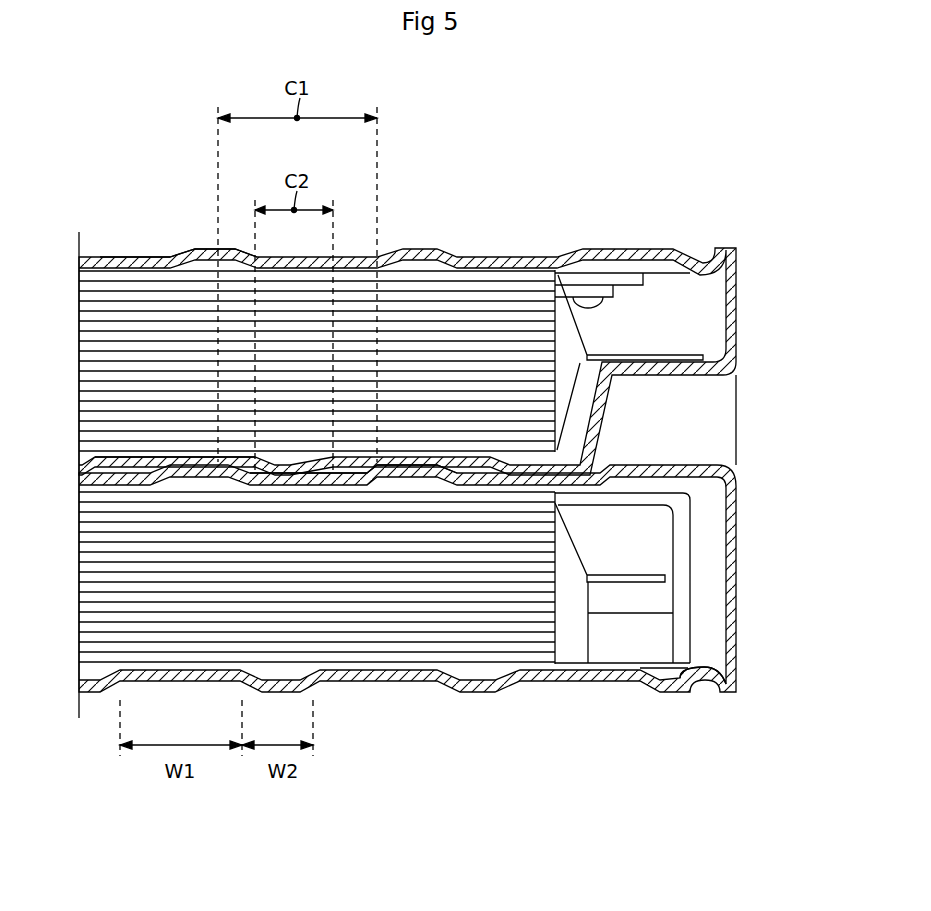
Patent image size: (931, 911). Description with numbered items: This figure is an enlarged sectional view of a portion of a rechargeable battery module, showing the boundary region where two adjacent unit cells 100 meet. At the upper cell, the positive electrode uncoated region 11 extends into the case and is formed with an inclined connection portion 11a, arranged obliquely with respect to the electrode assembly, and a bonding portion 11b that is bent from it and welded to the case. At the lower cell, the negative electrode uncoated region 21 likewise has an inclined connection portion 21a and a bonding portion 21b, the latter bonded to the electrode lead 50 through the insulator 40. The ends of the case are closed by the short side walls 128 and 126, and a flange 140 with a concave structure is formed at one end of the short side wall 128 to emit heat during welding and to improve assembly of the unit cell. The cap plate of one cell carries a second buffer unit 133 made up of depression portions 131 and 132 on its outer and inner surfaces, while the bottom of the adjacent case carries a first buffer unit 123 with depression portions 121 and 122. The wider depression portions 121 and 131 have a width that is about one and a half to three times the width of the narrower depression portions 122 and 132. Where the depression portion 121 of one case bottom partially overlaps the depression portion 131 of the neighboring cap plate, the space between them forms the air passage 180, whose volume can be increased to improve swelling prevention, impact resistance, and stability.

The unit cell 100 is at (440, 478).
The positive electrode uncoated region 11 is at (607, 291).
The inclined connection portion 11a is at (567, 337).
The bonding portion 11b is at (628, 357).
The short side wall 128 is at (736, 292).
The short side wall 126 is at (736, 590).
The flange 140 is at (670, 410).
The second buffer unit 133 is at (178, 199).
The depression portion 131 is at (138, 257).
The depression portion 132 is at (212, 218).
The first buffer unit 123 is at (257, 640).
The depression portion 121 is at (297, 458).
The depression portion 122 is at (355, 470).
The air passage 180 is at (473, 468).
The negative electrode uncoated region 21 is at (623, 652).
The inclined connection portion 21a is at (570, 593).
The bonding portion 21b is at (625, 577).
The electrode lead 50 is at (642, 600).
The insulator 40 is at (682, 652).